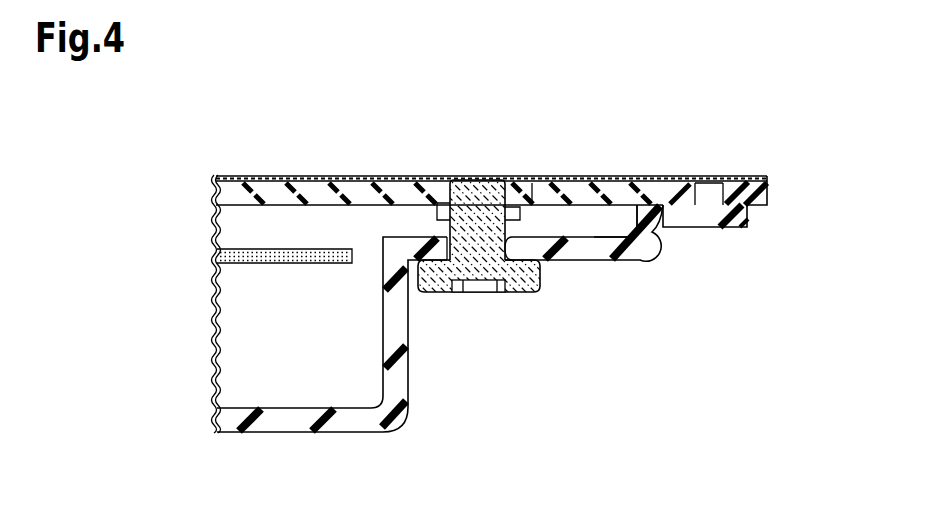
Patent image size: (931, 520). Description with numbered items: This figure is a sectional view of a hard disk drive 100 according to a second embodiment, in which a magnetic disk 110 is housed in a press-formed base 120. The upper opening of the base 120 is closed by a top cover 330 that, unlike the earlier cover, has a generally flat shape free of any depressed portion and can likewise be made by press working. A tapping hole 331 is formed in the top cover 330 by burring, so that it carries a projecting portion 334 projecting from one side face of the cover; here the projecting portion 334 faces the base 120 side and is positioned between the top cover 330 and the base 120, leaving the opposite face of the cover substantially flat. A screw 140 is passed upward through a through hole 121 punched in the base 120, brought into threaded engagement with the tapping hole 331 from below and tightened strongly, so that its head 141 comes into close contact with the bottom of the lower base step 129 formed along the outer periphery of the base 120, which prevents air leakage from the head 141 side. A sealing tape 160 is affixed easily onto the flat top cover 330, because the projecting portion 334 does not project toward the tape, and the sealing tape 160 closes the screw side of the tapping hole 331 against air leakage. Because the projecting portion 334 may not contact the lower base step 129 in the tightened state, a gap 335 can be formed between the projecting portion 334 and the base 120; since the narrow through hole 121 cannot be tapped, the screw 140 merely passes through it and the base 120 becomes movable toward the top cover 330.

The hard disk drive 100 is at (199, 177).
The magnetic disk 110 is at (216, 253).
The base 120 is at (355, 424).
The through hole 121 is at (512, 248).
The lower base step 129 is at (594, 236).
The screw 140 is at (490, 195).
The head 141 is at (524, 293).
The sealing tape 160 is at (265, 175).
The top cover 330 is at (666, 188).
The tapping hole 331 is at (447, 212).
The projecting portion 334 is at (510, 213).
The gap 335 is at (443, 232).